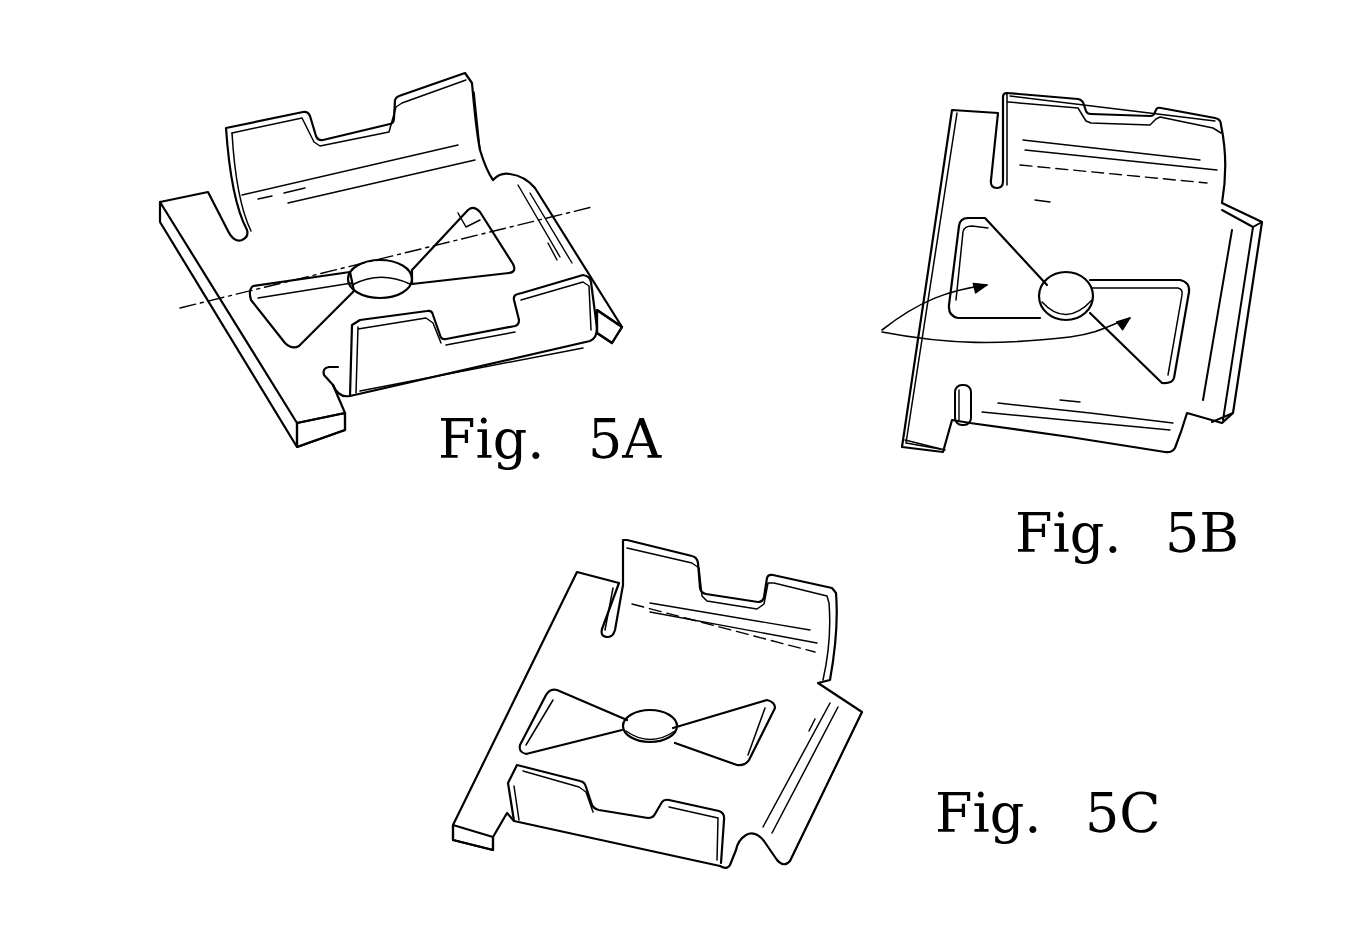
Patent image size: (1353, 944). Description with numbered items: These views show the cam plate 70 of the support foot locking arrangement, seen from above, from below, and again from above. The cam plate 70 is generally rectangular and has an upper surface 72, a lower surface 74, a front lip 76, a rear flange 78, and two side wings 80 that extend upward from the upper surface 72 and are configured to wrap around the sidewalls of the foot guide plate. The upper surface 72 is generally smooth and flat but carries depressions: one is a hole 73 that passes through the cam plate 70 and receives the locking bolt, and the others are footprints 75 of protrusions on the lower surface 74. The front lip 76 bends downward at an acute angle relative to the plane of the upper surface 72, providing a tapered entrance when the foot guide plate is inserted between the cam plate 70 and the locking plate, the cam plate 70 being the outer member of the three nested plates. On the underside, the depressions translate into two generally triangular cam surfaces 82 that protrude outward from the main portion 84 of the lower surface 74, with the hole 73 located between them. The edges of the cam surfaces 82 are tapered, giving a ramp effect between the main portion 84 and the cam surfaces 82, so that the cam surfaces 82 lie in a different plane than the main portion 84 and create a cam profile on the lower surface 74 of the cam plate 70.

In FIG. 5A, the cam plate 70 is at (525, 126).
In FIG. 5B, the cam plate 70 is at (1268, 168).
In FIG. 5C, the cam plate 70 is at (884, 660).
In FIG. 5A, the upper surface 72 is at (337, 270).
In FIG. 5B, the upper surface 72 is at (1082, 272).
In FIG. 5C, the upper surface 72 is at (597, 670).
In FIG. 5A, the hole 73 is at (387, 292).
In FIG. 5B, the hole 73 is at (1066, 280).
In FIG. 5C, the hole 73 is at (650, 743).
In FIG. 5B, the lower surface 74 is at (1173, 257).
In FIG. 5A, the footprints 75 is at (290, 331).
In FIG. 5B, the footprints 75 is at (1069, 300).
In FIG. 5C, the footprints 75 is at (740, 740).
In FIG. 5A, the front lip 76 is at (603, 310).
In FIG. 5B, the front lip 76 is at (1235, 390).
In FIG. 5C, the front lip 76 is at (800, 810).
In FIG. 5A, the rear flange 78 is at (307, 407).
In FIG. 5B, the rear flange 78 is at (972, 128).
In FIG. 5C, the rear flange 78 is at (478, 810).
In FIG. 5A, the side wings 80 is at (413, 88).
In FIG. 5B, the side wings 80 is at (1187, 120).
In FIG. 5C, the side wings 80 is at (802, 583).
In FIG. 5B, the cam surfaces 82 is at (990, 316).
In FIG. 5B, the main portion 84 is at (1043, 203).